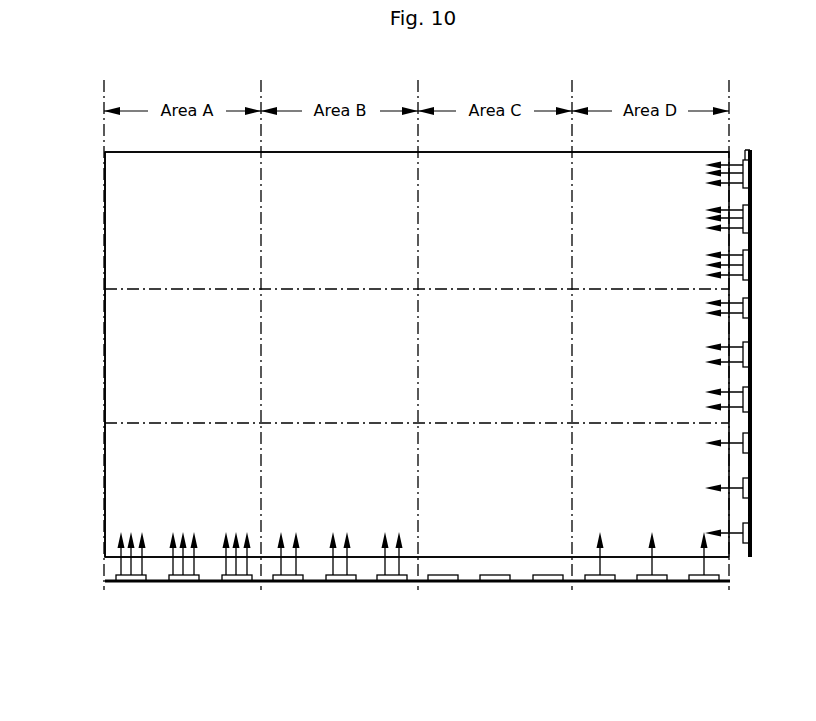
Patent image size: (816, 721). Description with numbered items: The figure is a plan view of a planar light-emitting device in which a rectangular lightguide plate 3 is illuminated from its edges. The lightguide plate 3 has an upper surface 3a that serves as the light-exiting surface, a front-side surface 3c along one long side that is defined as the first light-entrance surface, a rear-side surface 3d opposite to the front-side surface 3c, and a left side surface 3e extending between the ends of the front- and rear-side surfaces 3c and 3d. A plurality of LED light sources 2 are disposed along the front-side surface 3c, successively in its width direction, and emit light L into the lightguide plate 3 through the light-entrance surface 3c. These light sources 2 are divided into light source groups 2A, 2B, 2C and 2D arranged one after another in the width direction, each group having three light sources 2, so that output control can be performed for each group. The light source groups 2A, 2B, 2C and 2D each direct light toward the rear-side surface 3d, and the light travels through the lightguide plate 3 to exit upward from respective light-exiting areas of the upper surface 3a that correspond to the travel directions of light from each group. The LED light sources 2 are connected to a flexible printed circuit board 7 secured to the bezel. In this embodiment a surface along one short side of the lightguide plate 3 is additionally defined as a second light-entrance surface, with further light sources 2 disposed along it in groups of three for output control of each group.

The LED light source 2 is at (418, 633).
The light source group 2A is at (113, 638).
The light source group 2B is at (270, 638).
The light source group 2C is at (423, 638).
The light source group 2D is at (723, 638).
The lightguide plate 3 is at (398, 306).
The upper surface 3a is at (381, 334).
The front-side surface 3c is at (458, 553).
The rear-side surface 3d is at (453, 152).
The left side surface 3e is at (104, 275).
The flexible printed circuit board 7 is at (713, 584).
The light L is at (118, 540).